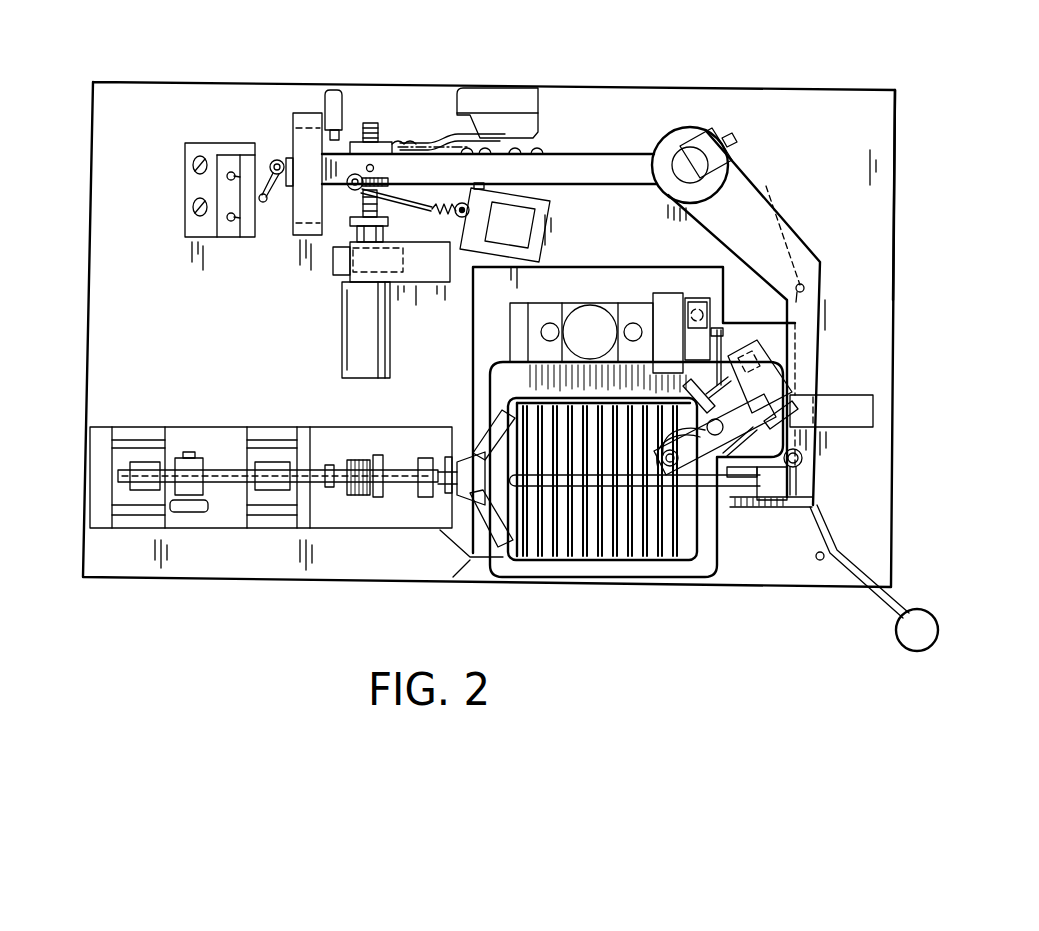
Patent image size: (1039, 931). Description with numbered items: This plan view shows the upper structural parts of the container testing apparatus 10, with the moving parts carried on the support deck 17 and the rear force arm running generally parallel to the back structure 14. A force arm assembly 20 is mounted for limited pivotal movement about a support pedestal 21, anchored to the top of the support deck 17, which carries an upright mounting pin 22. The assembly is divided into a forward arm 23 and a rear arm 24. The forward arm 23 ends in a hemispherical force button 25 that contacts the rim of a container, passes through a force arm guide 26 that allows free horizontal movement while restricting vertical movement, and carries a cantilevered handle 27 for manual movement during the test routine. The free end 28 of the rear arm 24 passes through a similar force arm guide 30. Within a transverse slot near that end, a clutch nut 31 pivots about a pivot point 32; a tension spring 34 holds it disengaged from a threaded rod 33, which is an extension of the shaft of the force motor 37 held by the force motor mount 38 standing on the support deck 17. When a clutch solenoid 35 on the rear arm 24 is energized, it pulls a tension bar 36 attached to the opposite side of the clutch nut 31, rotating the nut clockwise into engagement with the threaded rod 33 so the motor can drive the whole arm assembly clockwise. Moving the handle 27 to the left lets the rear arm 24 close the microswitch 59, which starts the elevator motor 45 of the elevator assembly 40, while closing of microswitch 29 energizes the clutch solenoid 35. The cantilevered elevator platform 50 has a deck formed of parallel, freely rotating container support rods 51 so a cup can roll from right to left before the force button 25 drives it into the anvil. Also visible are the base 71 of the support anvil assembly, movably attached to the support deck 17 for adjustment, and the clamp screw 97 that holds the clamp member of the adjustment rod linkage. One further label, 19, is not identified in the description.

The container testing apparatus 10 is at (690, 66).
The back structure 14 is at (292, 83).
The support deck 17 is at (838, 100).
The link rod 19 is at (770, 183).
The force arm assembly 20 is at (790, 226).
The support pedestal 21 is at (662, 138).
The mounting pin 22 is at (688, 148).
The forward arm 23 is at (822, 318).
The rear arm 24 is at (605, 153).
The force button 25 is at (693, 508).
The force arm guide 26 is at (843, 395).
The handle 27 is at (935, 610).
The free end 28 is at (290, 155).
The microswitch 29 is at (497, 112).
The force arm guide 30 is at (297, 240).
The clutch nut 31 is at (353, 192).
The pivot point 32 is at (375, 168).
The threaded rod 33 is at (373, 122).
The tension spring 34 is at (410, 140).
The clutch solenoid 35 is at (543, 227).
The tension bar 36 is at (405, 200).
The force motor 37 is at (342, 325).
The force motor mount 38 is at (391, 273).
The elevator assembly 40 is at (487, 383).
The elevator motor 45 is at (583, 313).
The elevator platform 50 is at (693, 553).
The container support rods 51 is at (647, 562).
The microswitch 59 is at (185, 198).
The base 71 is at (410, 430).
The clamp screw 97 is at (190, 512).